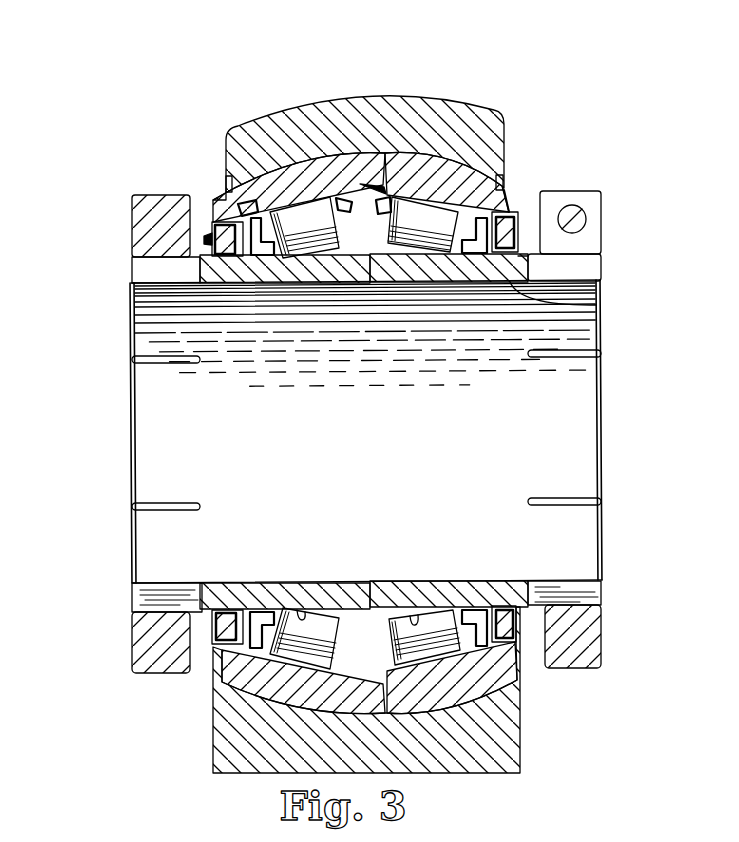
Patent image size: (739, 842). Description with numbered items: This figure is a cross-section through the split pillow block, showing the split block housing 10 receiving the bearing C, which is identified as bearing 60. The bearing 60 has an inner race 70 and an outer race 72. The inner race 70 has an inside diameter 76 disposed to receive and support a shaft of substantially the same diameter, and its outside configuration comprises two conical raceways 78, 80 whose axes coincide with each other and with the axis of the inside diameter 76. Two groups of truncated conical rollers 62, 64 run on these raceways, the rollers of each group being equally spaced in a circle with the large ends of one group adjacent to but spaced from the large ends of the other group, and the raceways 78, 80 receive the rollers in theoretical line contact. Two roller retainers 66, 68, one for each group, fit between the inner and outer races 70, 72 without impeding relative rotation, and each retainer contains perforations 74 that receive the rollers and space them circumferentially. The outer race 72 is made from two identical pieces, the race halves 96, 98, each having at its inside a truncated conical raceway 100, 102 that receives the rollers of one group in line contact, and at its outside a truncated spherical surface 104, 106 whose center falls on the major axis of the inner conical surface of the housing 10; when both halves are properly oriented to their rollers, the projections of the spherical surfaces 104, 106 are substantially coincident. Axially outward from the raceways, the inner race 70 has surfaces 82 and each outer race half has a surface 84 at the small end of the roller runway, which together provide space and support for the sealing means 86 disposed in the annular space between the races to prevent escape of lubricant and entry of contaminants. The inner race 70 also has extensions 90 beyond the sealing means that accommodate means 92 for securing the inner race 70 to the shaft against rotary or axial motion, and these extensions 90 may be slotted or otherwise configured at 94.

The split block housing 10 is at (500, 114).
The bearing 60 is at (208, 193).
The truncated conical rollers 62 is at (304, 227).
The truncated conical rollers 64 is at (423, 224).
The roller retainer 66 is at (228, 203).
The roller retainer 68 is at (467, 615).
The inner race 70 is at (370, 283).
The outer race 72 is at (362, 148).
The perforations 74 is at (328, 645).
The inside diameter 76 is at (597, 299).
The conical raceway 78 is at (300, 612).
The conical raceway 80 is at (412, 618).
The surface 82 is at (227, 612).
The surface 84 is at (523, 254).
The sealing means 86 is at (229, 617).
The extensions 90 is at (132, 270).
The securing means 92 is at (131, 218).
The slotted configuration 94 is at (152, 281).
The outer race half 96 is at (275, 180).
The outer race half 98 is at (449, 174).
The truncated conical raceway 100 is at (238, 670).
The truncated conical raceway 102 is at (512, 690).
The truncated spherical outer surface 104 is at (322, 150).
The truncated spherical outer surface 106 is at (393, 153).
The bearing C is at (512, 187).